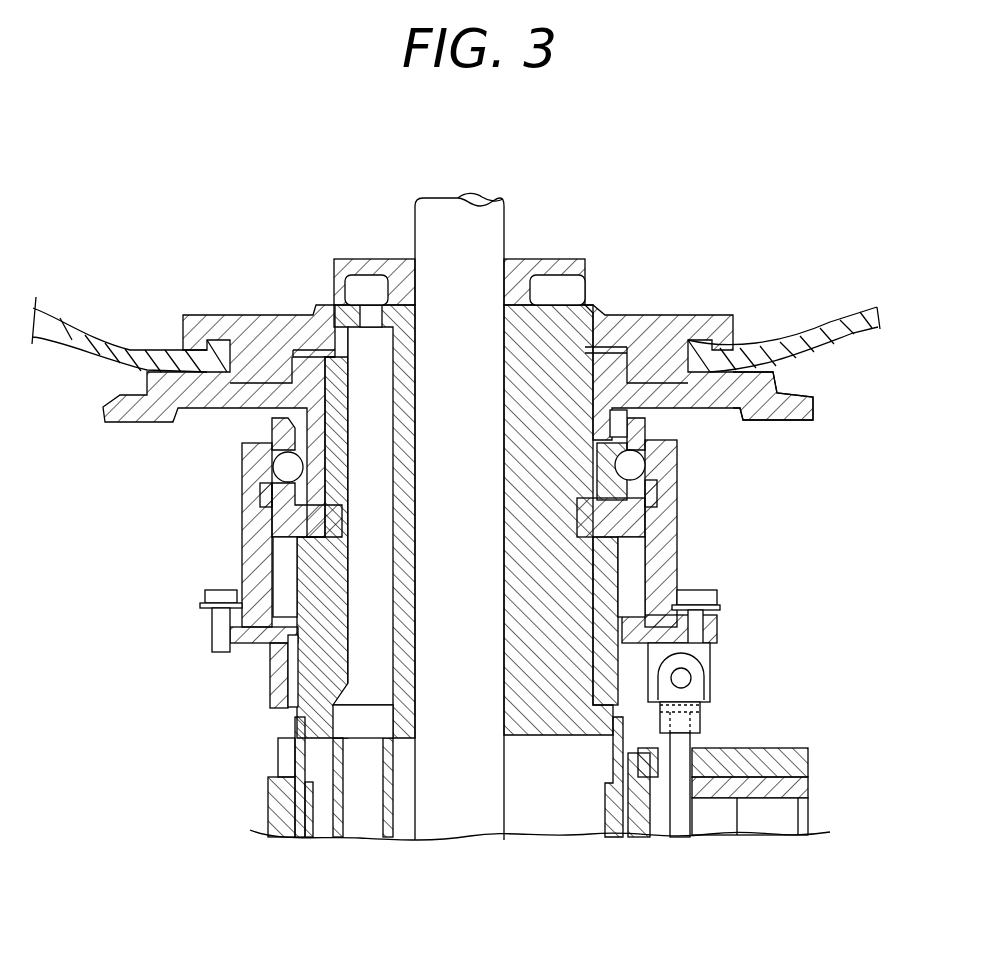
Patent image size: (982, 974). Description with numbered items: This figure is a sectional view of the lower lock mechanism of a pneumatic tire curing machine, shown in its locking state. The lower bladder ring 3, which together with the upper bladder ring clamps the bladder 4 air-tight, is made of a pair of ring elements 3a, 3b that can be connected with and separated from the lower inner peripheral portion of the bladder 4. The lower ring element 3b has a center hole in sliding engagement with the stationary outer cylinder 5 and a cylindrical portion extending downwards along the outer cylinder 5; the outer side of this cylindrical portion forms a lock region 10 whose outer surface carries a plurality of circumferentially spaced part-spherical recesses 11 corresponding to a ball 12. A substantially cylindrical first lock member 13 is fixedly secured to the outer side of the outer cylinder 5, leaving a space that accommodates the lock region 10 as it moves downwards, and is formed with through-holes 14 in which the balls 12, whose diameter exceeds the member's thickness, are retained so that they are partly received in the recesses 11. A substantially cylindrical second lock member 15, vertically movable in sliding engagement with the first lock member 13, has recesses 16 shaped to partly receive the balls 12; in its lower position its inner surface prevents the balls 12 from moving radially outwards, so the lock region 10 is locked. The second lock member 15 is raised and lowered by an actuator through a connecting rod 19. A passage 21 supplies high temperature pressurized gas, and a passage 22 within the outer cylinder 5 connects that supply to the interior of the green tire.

The lower bladder ring 3 is at (643, 289).
The ring element 3a is at (737, 338).
The lower ring element 3b is at (797, 403).
The bladder 4 is at (835, 307).
The stationary outer cylinder 5 is at (567, 316).
The lock region 10 is at (459, 458).
The recesses 11 is at (627, 467).
The ball 12 is at (623, 462).
The first lock member 13 is at (645, 440).
The through-holes 14 is at (643, 427).
The second lock member 15 is at (657, 468).
The recesses 16 is at (650, 497).
The connecting rod 19 is at (683, 768).
The passage 21 is at (337, 803).
The passage 22 is at (380, 630).